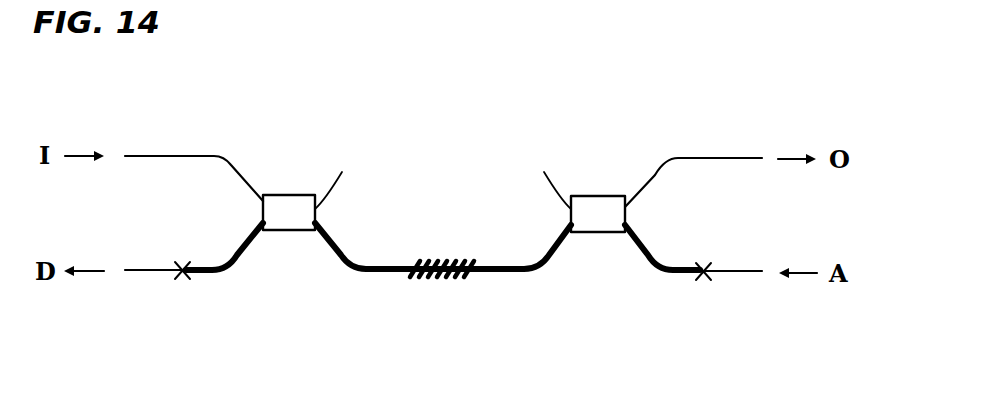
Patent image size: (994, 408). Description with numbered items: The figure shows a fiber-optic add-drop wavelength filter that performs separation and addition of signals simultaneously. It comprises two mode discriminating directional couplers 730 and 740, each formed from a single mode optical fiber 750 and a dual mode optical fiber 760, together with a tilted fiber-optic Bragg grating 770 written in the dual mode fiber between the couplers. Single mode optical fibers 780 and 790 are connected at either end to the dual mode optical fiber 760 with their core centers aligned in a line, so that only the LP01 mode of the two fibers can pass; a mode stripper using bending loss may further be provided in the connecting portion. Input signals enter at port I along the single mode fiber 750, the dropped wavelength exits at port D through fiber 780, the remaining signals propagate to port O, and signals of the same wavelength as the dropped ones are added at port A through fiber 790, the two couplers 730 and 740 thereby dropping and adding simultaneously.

The mode discriminating directional coupler 730 is at (289, 195).
The mode discriminating directional coupler 740 is at (597, 196).
The single mode optical fiber 750 is at (177, 156).
The dual mode optical fiber 760 is at (368, 273).
The tilted fiber-optic Bragg grating 770 is at (442, 262).
The single mode optical fiber 780 is at (152, 273).
The single mode optical fiber 790 is at (745, 275).